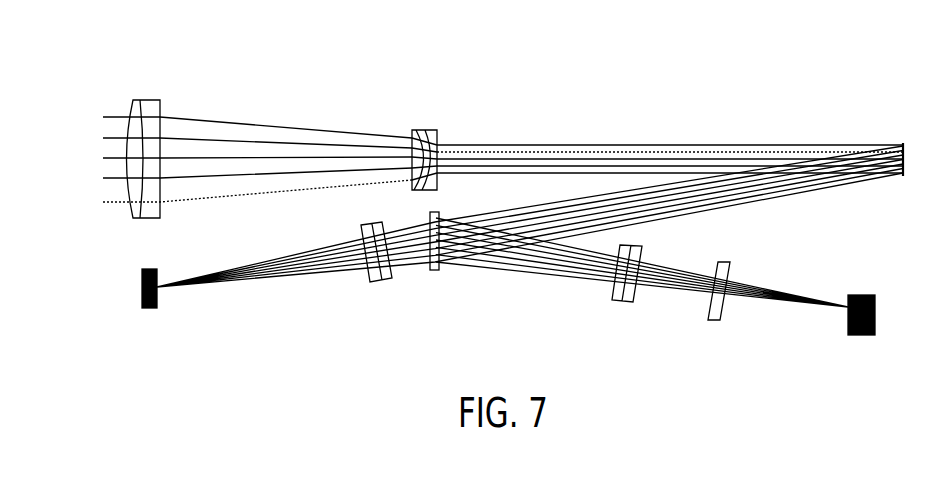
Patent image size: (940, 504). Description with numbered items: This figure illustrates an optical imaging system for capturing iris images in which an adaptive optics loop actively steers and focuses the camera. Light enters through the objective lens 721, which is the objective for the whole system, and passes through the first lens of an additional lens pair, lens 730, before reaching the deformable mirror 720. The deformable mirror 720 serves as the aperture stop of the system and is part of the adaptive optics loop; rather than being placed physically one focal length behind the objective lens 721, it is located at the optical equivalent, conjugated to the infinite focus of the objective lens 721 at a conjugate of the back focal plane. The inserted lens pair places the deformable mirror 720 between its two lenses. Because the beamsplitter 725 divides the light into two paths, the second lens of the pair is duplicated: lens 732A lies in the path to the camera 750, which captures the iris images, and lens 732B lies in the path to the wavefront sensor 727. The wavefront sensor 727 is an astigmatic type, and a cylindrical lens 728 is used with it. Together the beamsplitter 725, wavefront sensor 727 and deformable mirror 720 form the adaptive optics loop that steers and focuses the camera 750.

The deformable mirror 720 is at (903, 145).
The objective lens 721 is at (160, 100).
The beamsplitter 725 is at (440, 262).
The wavefront sensor 727 is at (848, 309).
The cylindrical lens 728 is at (720, 316).
The first lens of lens pair 730 is at (440, 130).
The second lens for camera 732A is at (392, 278).
The second lens for wavefront sensor 732B is at (633, 300).
The camera 750 is at (157, 300).